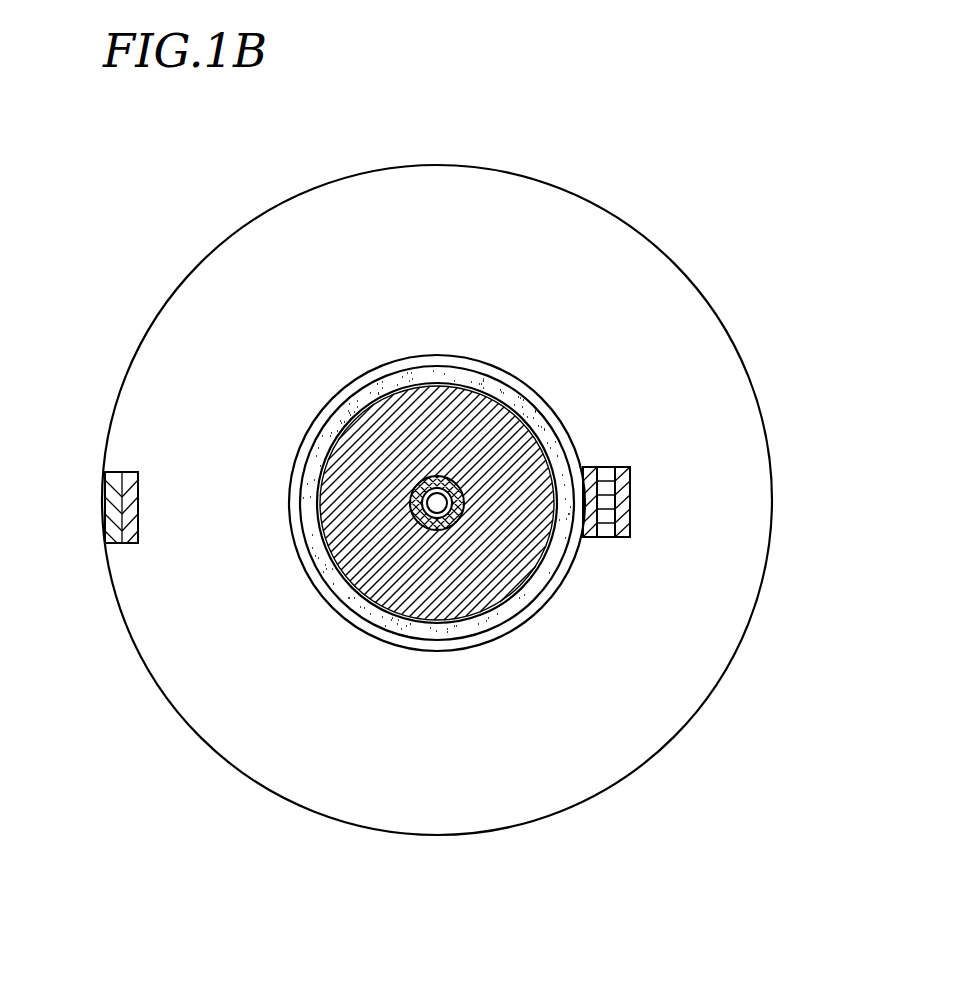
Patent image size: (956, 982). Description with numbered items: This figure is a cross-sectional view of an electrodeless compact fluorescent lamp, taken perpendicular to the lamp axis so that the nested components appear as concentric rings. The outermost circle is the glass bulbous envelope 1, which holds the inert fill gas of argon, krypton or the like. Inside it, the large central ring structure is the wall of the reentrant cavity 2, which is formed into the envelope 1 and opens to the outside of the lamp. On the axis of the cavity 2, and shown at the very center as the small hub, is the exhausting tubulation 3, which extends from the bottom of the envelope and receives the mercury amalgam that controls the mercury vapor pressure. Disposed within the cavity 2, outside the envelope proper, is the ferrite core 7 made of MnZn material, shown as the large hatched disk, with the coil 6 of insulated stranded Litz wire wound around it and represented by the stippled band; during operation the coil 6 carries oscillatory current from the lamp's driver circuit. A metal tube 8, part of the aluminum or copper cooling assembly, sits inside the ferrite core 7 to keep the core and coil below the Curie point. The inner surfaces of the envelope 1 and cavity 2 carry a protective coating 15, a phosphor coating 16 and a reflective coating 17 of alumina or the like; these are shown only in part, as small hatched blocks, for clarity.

The bulbous envelope 1 is at (607, 210).
The reentrant cavity 2 is at (320, 412).
The exhausting tubulation 3 is at (428, 478).
The coil 6 is at (548, 440).
The ferrite core 7 is at (497, 412).
The metal tube 8 is at (437, 480).
The protective coating 15 is at (115, 485).
The phosphor coating 16 is at (128, 528).
The reflective coating 17 is at (603, 527).